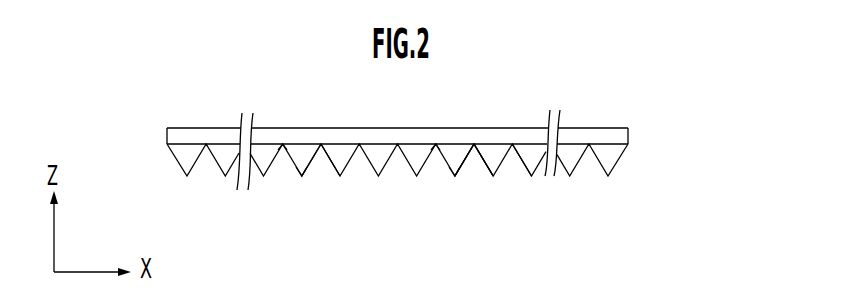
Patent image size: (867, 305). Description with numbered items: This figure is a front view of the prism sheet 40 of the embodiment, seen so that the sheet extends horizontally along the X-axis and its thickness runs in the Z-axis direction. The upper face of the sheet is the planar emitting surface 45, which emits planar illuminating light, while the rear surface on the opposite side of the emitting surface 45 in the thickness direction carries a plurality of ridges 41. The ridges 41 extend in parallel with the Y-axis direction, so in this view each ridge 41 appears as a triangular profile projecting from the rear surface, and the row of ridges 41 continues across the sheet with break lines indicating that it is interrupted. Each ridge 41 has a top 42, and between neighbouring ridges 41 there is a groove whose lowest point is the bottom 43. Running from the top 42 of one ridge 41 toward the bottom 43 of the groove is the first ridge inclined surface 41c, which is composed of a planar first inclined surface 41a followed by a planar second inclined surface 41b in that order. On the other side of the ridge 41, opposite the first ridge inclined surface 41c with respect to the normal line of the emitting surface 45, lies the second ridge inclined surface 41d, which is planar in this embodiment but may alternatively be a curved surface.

The prism sheet 40 is at (455, 166).
The ridge 41 is at (217, 160).
The first inclined surface 41a is at (467, 160).
The second inclined surface 41b is at (479, 158).
The first ridge inclined surface 41c is at (310, 168).
The second ridge inclined surface 41d is at (292, 158).
The top 42 is at (299, 177).
The bottom 43 is at (328, 156).
The emitting surface 45 is at (502, 128).